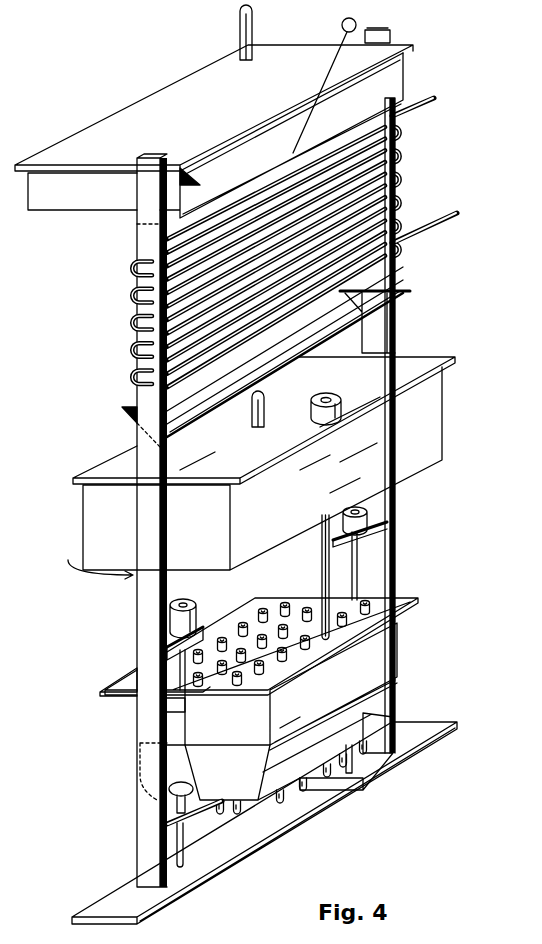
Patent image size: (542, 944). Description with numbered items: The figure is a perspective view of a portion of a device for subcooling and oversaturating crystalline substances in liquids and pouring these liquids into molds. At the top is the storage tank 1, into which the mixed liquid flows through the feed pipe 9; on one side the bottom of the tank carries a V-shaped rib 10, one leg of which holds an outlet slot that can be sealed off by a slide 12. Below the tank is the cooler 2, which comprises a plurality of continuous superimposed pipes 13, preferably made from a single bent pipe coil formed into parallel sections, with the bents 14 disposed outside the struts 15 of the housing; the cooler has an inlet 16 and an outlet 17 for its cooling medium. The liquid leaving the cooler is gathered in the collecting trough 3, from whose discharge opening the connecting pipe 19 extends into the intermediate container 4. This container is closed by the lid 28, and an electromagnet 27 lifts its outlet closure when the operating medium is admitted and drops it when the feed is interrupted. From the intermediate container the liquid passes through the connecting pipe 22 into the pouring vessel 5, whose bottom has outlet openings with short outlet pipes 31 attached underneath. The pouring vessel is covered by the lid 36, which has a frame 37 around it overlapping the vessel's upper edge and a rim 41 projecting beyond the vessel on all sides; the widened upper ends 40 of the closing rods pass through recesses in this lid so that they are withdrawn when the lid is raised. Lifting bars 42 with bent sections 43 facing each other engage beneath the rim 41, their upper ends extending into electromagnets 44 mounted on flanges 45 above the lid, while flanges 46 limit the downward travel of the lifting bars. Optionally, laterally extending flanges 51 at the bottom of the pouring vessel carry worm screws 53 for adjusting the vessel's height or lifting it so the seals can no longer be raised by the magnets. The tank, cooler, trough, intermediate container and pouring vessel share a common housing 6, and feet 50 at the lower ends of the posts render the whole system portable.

The storage tank 1 is at (110, 118).
The cooler 2 is at (257, 257).
The collecting trough 3 is at (397, 281).
The intermediate container 4 is at (93, 514).
The pouring vessel 5 is at (377, 697).
The common housing 6 is at (92, 562).
The feed pipe 9 is at (240, 31).
The V-shaped rib 10 is at (137, 226).
The slide 12 is at (341, 33).
The pipes 13 is at (150, 311).
The bents 14 is at (135, 360).
The struts 15 is at (147, 190).
The inlet 16 is at (443, 210).
The outlet 17 is at (430, 92).
The connecting pipe 19 is at (137, 448).
The connecting pipe 22 is at (333, 557).
The electromagnet 27 is at (347, 383).
The lid 28 is at (113, 467).
The short outlet pipes 31 is at (298, 796).
The lid 36 is at (372, 620).
The frame 37 is at (382, 658).
The upper ends of the closing rods 40 is at (370, 591).
The rim 41 is at (102, 689).
The lifting bars 42 is at (180, 660).
The bent sections 43 is at (140, 733).
The electromagnets 44 is at (172, 606).
The flanges 45 is at (170, 638).
The flanges 46 is at (167, 707).
The feet 50 is at (117, 893).
The flanges 51 is at (167, 823).
The worm screws 53 is at (169, 789).